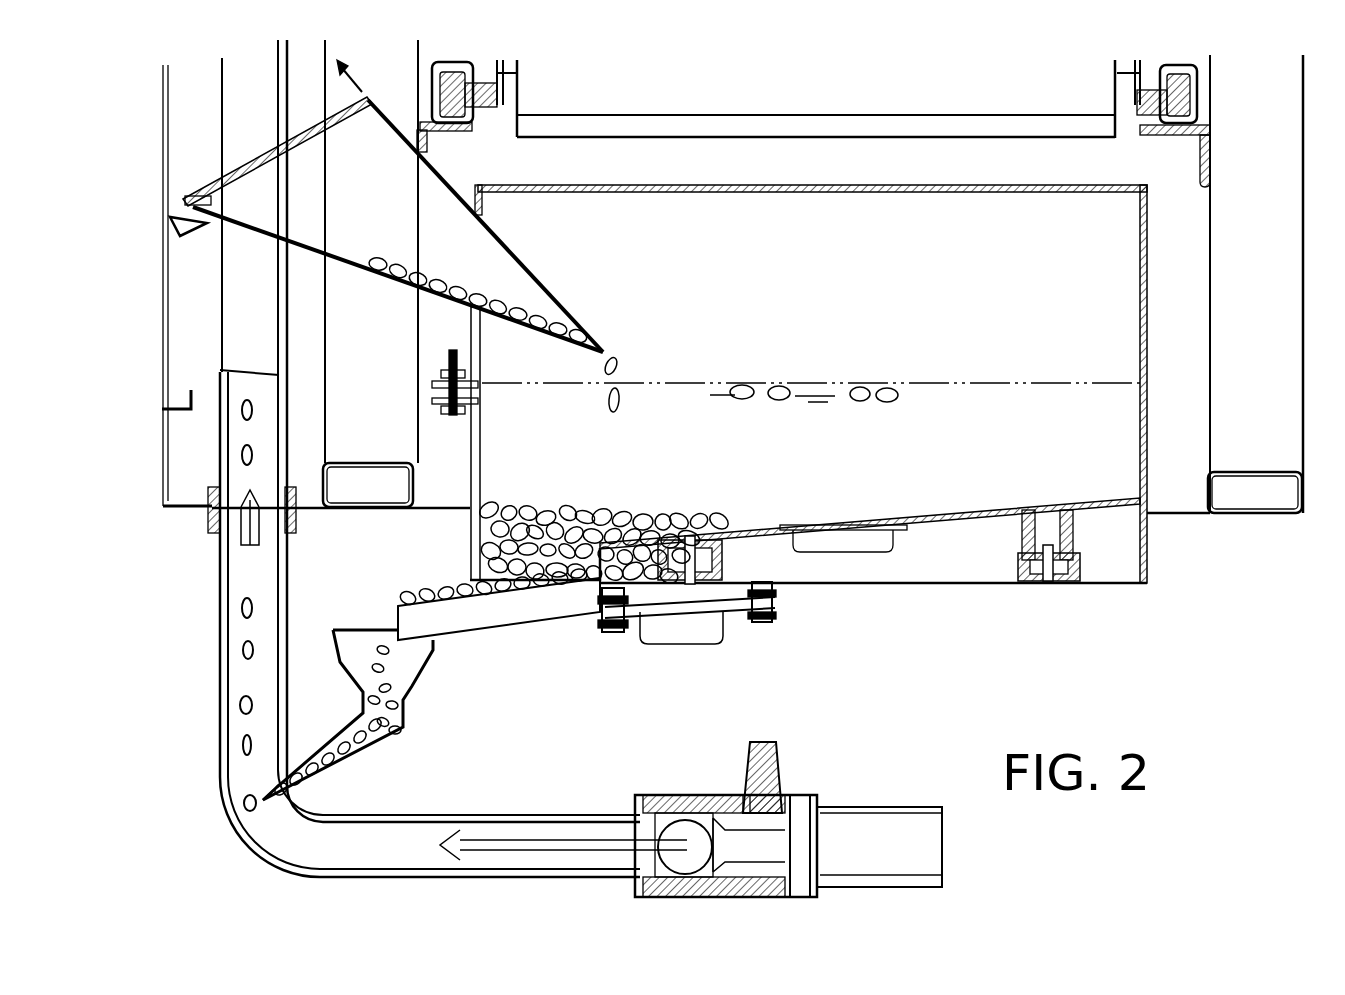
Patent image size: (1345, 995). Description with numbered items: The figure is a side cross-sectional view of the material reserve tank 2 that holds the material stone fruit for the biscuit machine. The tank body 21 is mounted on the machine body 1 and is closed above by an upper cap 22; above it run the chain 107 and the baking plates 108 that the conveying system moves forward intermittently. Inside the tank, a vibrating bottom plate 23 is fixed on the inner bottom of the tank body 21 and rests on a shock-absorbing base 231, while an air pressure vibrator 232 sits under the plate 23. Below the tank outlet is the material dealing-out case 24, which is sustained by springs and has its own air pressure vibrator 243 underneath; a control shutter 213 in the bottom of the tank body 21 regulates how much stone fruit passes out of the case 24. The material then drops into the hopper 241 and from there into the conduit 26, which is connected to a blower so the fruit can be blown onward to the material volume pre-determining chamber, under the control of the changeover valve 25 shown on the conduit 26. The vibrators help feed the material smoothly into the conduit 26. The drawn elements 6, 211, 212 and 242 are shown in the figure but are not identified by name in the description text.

The machine body 1 is at (1258, 453).
The material reserve tank 2 is at (1165, 392).
The tank body 21 is at (1163, 513).
The upper cap 22 is at (945, 186).
The vibrating bottom plate 23 is at (984, 512).
The shock-absorbing base 231 is at (733, 613).
The air pressure vibrator 232 is at (880, 553).
The material dealing-out case 24 is at (550, 640).
The hopper 241 is at (382, 738).
The nut 242 is at (635, 633).
The air pressure vibrator 243 is at (698, 645).
The changeover valve 25 is at (815, 780).
The conduit 26 is at (218, 610).
The stones 6 is at (615, 362).
The chain 107 is at (1143, 119).
The baking plate 108 is at (800, 115).
The hopper 211 is at (270, 212).
The left wall 212 is at (165, 138).
The control shutter 213 is at (470, 534).